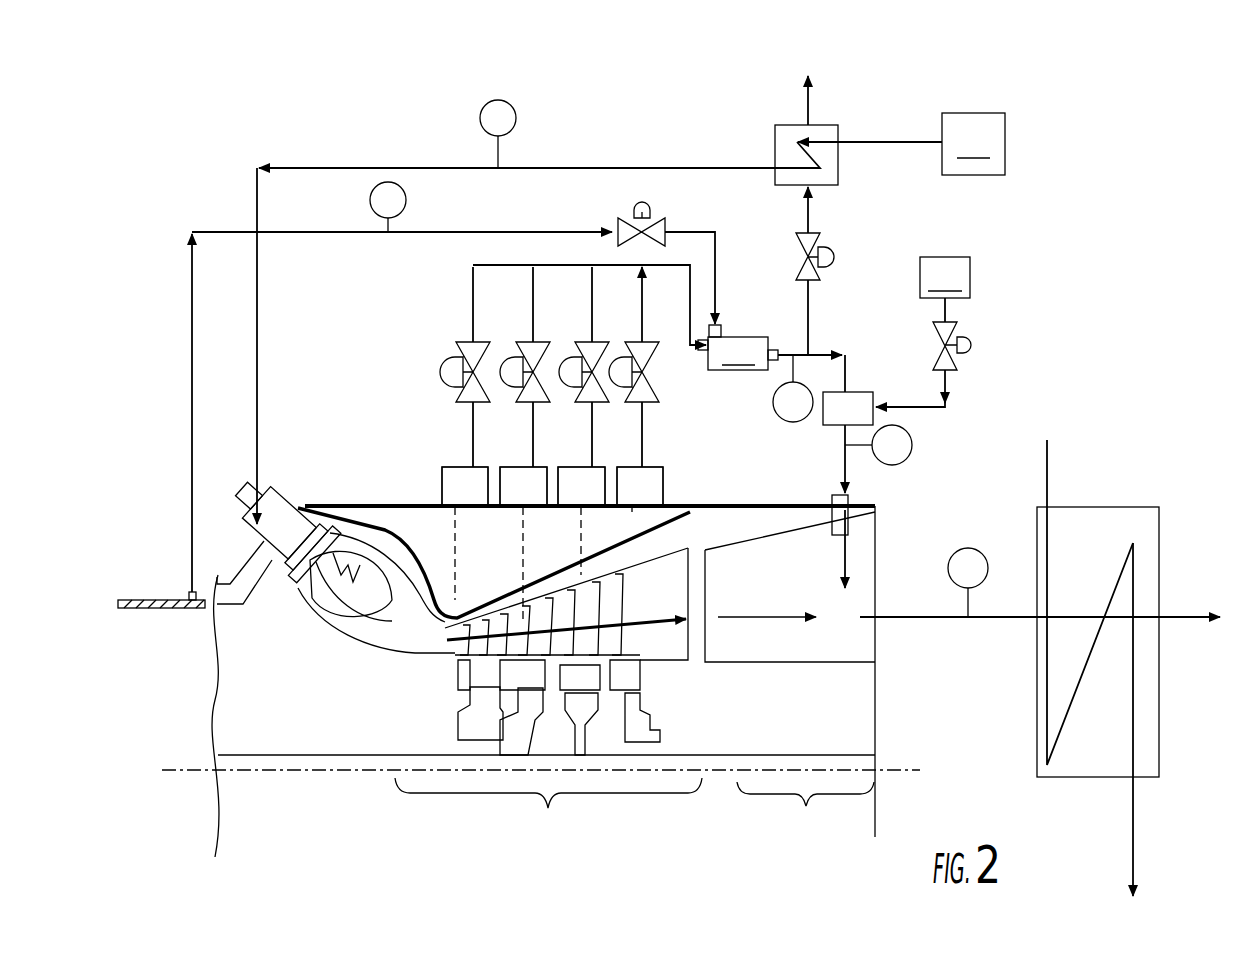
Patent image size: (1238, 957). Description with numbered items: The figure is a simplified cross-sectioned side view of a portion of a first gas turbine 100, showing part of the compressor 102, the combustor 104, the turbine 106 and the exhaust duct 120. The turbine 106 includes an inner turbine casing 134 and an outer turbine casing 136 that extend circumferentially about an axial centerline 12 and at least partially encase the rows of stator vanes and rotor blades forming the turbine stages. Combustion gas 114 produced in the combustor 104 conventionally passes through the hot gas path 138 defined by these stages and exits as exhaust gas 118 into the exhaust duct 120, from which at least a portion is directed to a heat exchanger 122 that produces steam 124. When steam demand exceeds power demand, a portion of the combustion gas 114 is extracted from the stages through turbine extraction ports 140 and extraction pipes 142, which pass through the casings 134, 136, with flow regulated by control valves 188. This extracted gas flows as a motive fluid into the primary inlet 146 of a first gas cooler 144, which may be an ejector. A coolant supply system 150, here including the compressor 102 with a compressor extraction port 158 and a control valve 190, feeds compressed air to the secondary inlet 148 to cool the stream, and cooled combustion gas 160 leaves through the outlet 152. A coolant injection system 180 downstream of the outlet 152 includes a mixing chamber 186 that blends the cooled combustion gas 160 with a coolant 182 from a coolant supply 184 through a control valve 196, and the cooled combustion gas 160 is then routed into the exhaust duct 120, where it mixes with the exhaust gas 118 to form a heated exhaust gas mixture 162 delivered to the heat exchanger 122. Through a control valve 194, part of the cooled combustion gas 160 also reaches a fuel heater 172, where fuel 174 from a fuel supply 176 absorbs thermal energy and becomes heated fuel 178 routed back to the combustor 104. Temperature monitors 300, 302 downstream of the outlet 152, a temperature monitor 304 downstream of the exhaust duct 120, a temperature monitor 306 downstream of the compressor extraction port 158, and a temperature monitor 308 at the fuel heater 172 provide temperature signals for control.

The axial centerline 12 is at (310, 776).
The first gas turbine 100 is at (252, 138).
The compressor 102 is at (136, 588).
The combustor 104 is at (246, 490).
The turbine 106 is at (548, 809).
The combustion gas 114 is at (550, 265).
The exhaust gas 118 is at (757, 617).
The exhaust duct 120 is at (757, 675).
The heat exchanger 122 is at (1115, 507).
The steam 124 is at (1132, 826).
The inner turbine casing 134 is at (390, 531).
The outer turbine casing 136 is at (328, 492).
The hot gas path 138 is at (618, 616).
The turbine extraction ports 140 is at (670, 477).
The extraction pipes 142 is at (455, 522).
The first gas cooler 144 is at (738, 353).
The primary inlet 146 is at (712, 352).
The secondary inlet 148 is at (723, 329).
The coolant supply system 150 is at (174, 352).
The outlet 152 is at (779, 362).
The compressor extraction port 158 is at (190, 592).
The cooled combustion gas 160 is at (800, 98).
The heated exhaust gas mixture 162 is at (876, 625).
The fuel heater 172 is at (822, 126).
The fuel 174 is at (878, 145).
The fuel supply 176 is at (973, 144).
The heated fuel 178 is at (260, 365).
The coolant injection system 180 is at (988, 280).
The coolant 182 is at (888, 407).
The coolant supply 184 is at (945, 277).
The mixing chamber 186 is at (852, 400).
The control valves 188 is at (458, 362).
The control valve 190 is at (656, 215).
The control valve 194 is at (834, 262).
The control valve 196 is at (966, 357).
The temperature monitor 300 is at (794, 420).
The temperature monitor 302 is at (902, 445).
The temperature monitor 304 is at (976, 556).
The temperature monitor 306 is at (393, 203).
The temperature monitor 308 is at (503, 120).